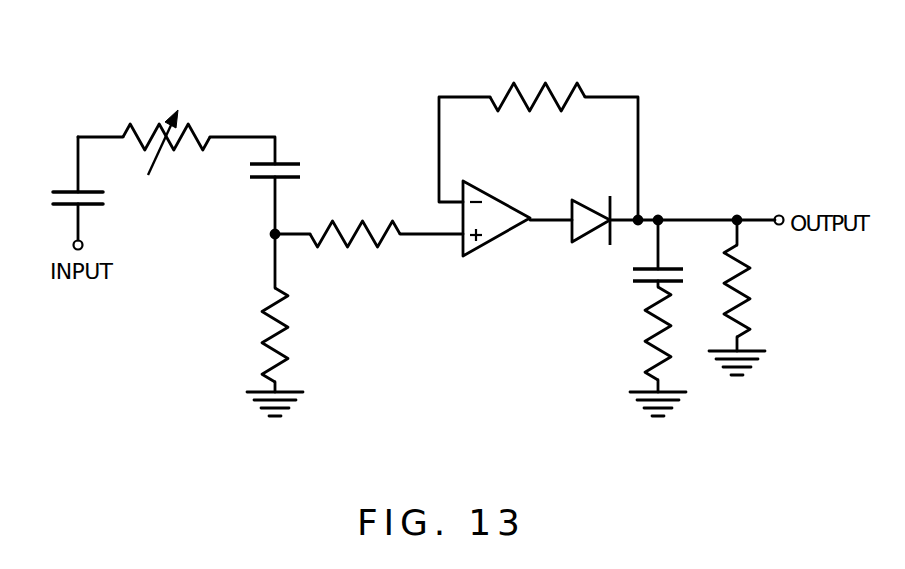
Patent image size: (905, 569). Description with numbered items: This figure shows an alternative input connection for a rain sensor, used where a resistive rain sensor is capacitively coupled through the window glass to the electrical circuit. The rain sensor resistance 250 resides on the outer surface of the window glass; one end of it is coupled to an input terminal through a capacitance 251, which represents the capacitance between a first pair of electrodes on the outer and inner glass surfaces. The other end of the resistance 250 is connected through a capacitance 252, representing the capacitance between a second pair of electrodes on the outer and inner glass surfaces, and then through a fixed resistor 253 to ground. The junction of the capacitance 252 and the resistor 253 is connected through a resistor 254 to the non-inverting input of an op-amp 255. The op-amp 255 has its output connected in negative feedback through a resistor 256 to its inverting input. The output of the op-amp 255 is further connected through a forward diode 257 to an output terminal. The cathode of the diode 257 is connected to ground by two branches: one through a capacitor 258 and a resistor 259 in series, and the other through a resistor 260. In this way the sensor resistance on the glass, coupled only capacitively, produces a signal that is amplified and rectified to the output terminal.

The rain sensor resistance 250 is at (198, 132).
The capacitance 251 is at (72, 190).
The capacitance 252 is at (283, 160).
The fixed resistor 253 is at (268, 333).
The resistor 254 is at (368, 236).
The op-amp 255 is at (499, 229).
The resistor 256 is at (513, 83).
The forward diode 257 is at (593, 205).
The capacitor 258 is at (651, 285).
The resistor 259 is at (653, 323).
The resistor 260 is at (747, 280).